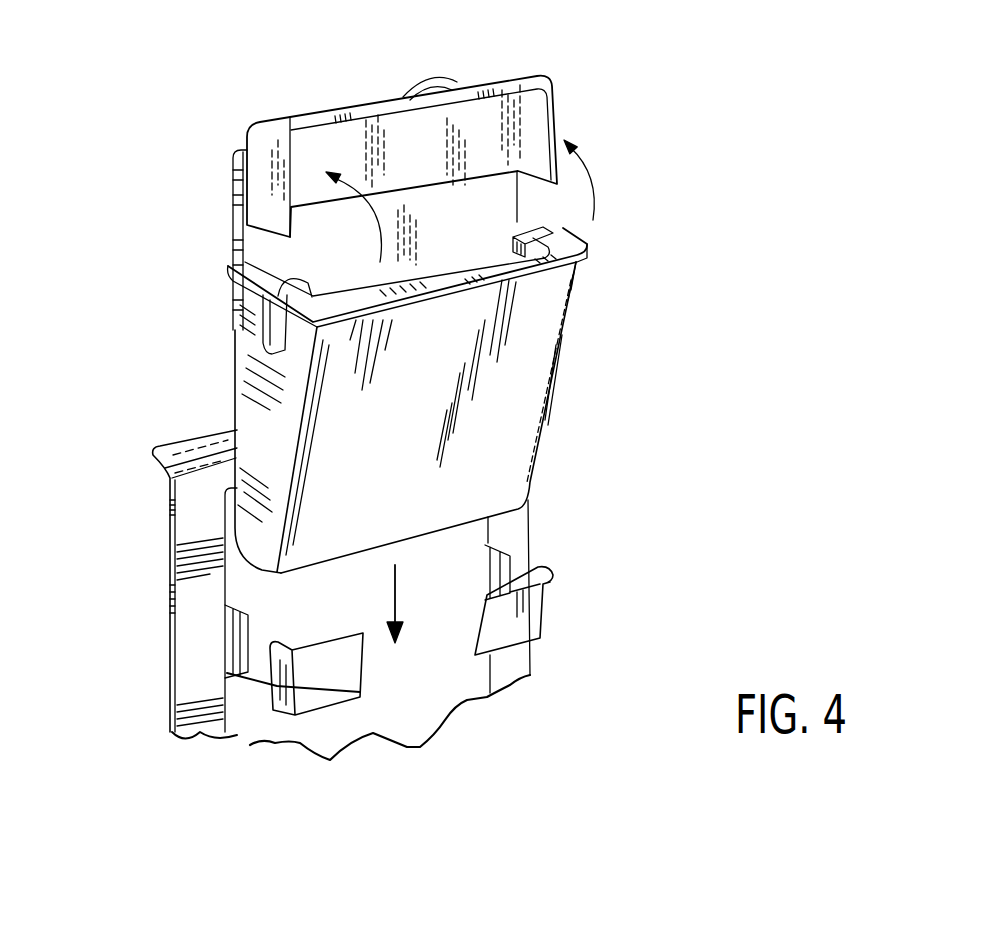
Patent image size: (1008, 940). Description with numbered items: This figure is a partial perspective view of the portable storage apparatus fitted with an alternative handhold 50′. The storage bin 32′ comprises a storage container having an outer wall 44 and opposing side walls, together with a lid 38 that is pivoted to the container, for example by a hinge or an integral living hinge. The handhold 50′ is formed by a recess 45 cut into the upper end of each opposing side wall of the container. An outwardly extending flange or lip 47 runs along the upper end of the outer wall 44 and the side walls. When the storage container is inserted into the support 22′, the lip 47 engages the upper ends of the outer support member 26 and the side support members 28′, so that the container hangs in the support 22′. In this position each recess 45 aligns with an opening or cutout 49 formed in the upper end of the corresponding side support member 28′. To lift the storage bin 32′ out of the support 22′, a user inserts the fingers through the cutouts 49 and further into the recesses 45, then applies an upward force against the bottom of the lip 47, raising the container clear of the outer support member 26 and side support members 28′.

The lid 38 is at (575, 103).
The storage bin 32′ is at (644, 260).
The outer wall 44 is at (500, 392).
The recess 45 is at (237, 342).
The lip 47 is at (237, 282).
The support 22′ is at (595, 604).
The cutout 49 is at (243, 653).
The side support member 28′ is at (277, 680).
The outer support member 26 is at (360, 692).
The handhold 50′ is at (101, 307).